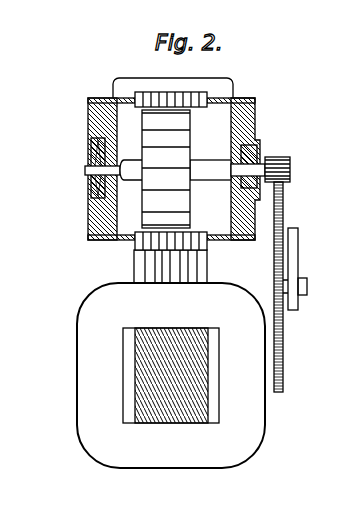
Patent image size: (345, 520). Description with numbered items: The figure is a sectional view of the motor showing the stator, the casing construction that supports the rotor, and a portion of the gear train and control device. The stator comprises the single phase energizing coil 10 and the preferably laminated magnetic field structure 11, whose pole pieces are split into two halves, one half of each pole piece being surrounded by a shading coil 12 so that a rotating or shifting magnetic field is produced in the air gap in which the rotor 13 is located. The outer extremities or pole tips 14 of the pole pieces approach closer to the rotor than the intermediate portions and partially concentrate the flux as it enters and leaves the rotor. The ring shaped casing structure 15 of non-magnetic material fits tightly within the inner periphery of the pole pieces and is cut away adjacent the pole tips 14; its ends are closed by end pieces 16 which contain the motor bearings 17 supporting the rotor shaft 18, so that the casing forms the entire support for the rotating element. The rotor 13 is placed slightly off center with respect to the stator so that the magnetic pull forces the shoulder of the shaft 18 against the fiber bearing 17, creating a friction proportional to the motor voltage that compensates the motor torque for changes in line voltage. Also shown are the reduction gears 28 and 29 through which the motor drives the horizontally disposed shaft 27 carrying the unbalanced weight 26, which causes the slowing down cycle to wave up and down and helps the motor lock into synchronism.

The single phase energizing coil 10 is at (267, 418).
The magnetic field structure 11 is at (208, 265).
The shading coil 12 is at (131, 83).
The rotor 13 is at (190, 136).
The pole tips 14 is at (200, 98).
The casing structure 15 is at (103, 99).
The end pieces 16 is at (88, 118).
The motor bearings 17 is at (91, 181).
The rotor shaft 18 is at (207, 180).
The unbalanced weight 26 is at (298, 238).
The horizontally disposed shaft 27 is at (307, 285).
The reduction gear 28 is at (290, 170).
The reduction gear 29 is at (283, 200).